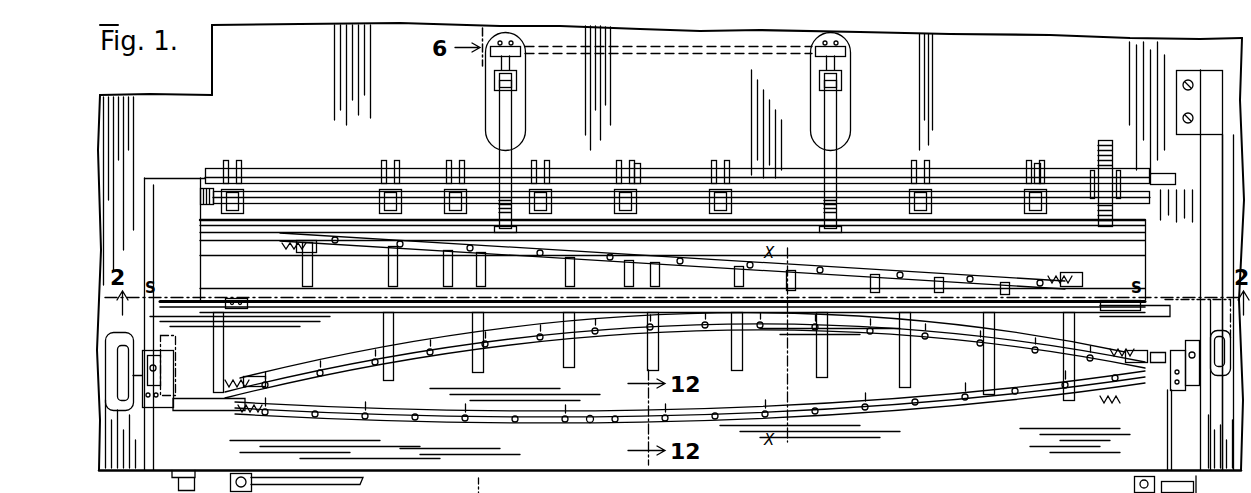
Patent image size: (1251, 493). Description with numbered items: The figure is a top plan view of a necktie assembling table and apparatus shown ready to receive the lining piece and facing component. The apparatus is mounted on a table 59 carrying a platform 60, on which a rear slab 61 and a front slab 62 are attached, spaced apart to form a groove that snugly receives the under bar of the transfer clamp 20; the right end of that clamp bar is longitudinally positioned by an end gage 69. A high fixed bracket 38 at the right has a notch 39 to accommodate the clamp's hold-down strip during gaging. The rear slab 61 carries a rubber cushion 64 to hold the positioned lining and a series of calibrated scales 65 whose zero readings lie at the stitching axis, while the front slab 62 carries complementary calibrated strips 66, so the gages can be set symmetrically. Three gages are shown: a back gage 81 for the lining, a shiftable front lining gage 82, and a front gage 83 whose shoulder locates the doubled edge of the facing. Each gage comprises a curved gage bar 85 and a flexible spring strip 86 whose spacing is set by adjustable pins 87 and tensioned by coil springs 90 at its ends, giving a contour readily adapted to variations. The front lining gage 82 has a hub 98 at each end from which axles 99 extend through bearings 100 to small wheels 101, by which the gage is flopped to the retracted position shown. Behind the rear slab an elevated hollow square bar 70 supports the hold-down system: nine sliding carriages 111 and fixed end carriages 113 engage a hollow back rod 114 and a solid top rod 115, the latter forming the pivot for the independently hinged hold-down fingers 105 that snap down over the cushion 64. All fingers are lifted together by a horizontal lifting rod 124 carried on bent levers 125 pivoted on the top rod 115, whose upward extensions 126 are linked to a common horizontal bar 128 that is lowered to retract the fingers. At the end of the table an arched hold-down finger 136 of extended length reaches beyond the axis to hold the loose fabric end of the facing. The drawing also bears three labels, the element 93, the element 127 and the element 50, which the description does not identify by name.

The table 59 is at (280, 86).
The platform 60 is at (174, 183).
The rear slab 61 is at (200, 238).
The cushion 64 is at (200, 270).
The transfer clamp 20 is at (290, 298).
The calibrated scales 65 is at (311, 266).
The calibrated strips 66 is at (308, 348).
The elevated bar 70 is at (200, 202).
The back gage 81 is at (283, 241).
The front lining gage 82 is at (160, 336).
The front gage 83 is at (323, 368).
The gage bar 85 is at (516, 410).
The spring strip 86 is at (536, 430).
The pins 87 is at (597, 408).
The coil springs 90 is at (280, 250).
The post 93 is at (368, 378).
The hub 98 is at (169, 412).
The axles 99 is at (173, 376).
The bearings 100 is at (140, 402).
The wheels 101 is at (134, 345).
The hold-down fingers 105 is at (637, 186).
The carriages 111 is at (404, 168).
The end carriages 113 is at (262, 166).
The back rod 114 is at (291, 169).
The top rod 115 is at (374, 168).
The lifting rod 124 is at (598, 214).
The bent levers 125 is at (512, 157).
The upward extensions 126 is at (512, 100).
The cap 127 is at (517, 64).
The horizontal bar 128 is at (668, 62).
The arched hold-down finger 136 is at (1098, 142).
The fixed bracket 38 is at (1212, 146).
The notch 39 is at (1200, 296).
The end gage 69 is at (1140, 362).
The front slab 62 is at (950, 473).
The base 50 is at (1207, 484).